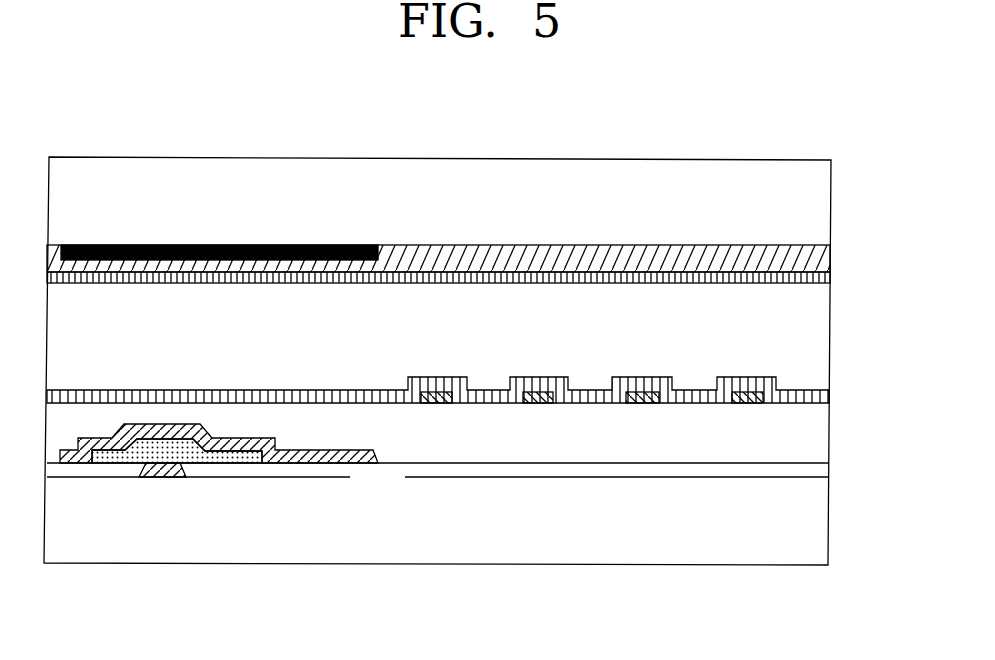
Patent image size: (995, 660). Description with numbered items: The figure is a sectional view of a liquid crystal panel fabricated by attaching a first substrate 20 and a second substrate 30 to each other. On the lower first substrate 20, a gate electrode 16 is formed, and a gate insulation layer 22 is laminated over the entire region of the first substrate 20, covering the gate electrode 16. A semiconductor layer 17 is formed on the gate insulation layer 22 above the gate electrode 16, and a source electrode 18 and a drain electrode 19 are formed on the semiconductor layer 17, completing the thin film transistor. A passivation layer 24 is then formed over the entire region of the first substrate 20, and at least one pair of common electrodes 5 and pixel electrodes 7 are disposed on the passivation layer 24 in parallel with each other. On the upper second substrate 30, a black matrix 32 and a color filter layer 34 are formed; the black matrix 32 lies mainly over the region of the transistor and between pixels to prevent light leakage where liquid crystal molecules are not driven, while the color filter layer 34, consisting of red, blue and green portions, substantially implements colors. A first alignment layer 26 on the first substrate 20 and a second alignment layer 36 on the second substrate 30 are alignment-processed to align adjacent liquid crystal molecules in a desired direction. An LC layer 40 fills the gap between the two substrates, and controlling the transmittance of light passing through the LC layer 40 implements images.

The common electrode 5 is at (430, 398).
The pixel electrode 7 is at (530, 398).
The gate electrode 16 is at (160, 474).
The semiconductor layer 17 is at (213, 458).
The source electrode 18 is at (75, 463).
The drain electrode 19 is at (323, 456).
The first substrate 20 is at (818, 526).
The gate insulation layer 22 is at (820, 471).
The passivation layer 24 is at (820, 436).
The first alignment layer 26 is at (820, 394).
The second substrate 30 is at (822, 206).
The black matrix 32 is at (268, 245).
The color filter layer 34 is at (517, 258).
The second alignment layer 36 is at (830, 277).
The LC layer 40 is at (822, 332).